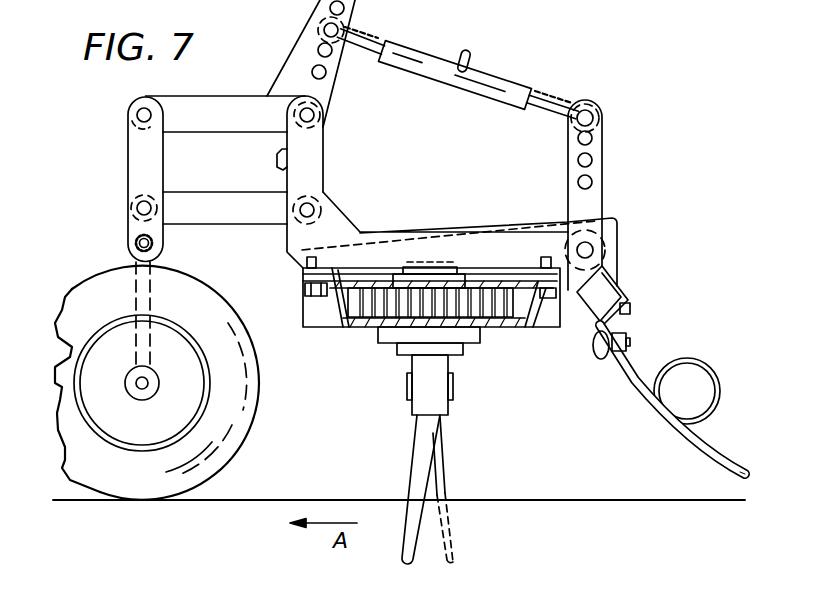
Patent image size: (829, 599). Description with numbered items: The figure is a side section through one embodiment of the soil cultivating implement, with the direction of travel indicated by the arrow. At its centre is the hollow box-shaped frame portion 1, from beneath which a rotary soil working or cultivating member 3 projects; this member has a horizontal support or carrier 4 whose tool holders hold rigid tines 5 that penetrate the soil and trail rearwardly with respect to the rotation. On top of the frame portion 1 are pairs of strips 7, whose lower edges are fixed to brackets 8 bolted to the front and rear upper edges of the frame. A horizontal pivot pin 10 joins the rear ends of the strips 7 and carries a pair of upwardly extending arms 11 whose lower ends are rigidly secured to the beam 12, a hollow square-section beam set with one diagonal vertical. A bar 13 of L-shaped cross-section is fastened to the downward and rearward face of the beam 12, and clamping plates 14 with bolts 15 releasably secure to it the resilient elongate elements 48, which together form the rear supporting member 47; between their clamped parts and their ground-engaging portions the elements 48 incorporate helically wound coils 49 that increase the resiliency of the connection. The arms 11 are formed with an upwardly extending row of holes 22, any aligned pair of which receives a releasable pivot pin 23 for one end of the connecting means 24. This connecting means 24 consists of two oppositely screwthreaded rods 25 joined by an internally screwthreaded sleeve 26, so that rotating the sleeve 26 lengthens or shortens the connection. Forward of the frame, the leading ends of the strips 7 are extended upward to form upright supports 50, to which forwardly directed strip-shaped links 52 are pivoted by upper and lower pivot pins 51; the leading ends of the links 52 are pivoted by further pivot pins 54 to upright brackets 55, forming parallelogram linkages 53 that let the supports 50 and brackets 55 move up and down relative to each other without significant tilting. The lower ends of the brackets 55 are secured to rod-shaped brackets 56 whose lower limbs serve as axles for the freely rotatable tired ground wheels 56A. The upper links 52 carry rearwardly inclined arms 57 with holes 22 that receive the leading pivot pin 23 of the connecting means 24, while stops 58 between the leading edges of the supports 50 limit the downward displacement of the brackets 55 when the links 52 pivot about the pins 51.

The hollow box-shaped frame portion 1 is at (348, 330).
The rotary soil working or cultivating member 3 is at (410, 446).
The support or carrier 4 is at (441, 384).
The rigid tines 5 is at (422, 492).
The strips 7 is at (394, 233).
The brackets 8 is at (303, 270).
The pivot pin 10 is at (597, 246).
The upwardly extending arms 11 is at (603, 168).
The beam 12 is at (611, 282).
The bar of L-shaped cross-section 13 is at (630, 312).
The clamping plates 14 is at (598, 332).
The bolts 15 is at (604, 359).
The holes 22 is at (327, 72).
The releasable pivot pin 23 is at (339, 29).
The connecting means 24 is at (457, 83).
The screwthreaded rods 25 is at (378, 54).
The internally screwthreaded sleeve 26 is at (468, 92).
The rear supporting member 47 is at (690, 456).
The elongate elements 48 is at (733, 468).
The helically wound coils 49 is at (698, 420).
The upright supports 50 is at (323, 165).
The pivot pins 51 is at (318, 123).
The strip-shaped links 52 is at (203, 103).
The parallelogram linkages 53 is at (226, 167).
The pivot pins 54 is at (137, 115).
The upright brackets 55 is at (128, 153).
The rod-shaped brackets 56 is at (152, 294).
The tired ground wheels 56A is at (197, 492).
The arms 57 is at (300, 54).
The stops 58 is at (283, 168).